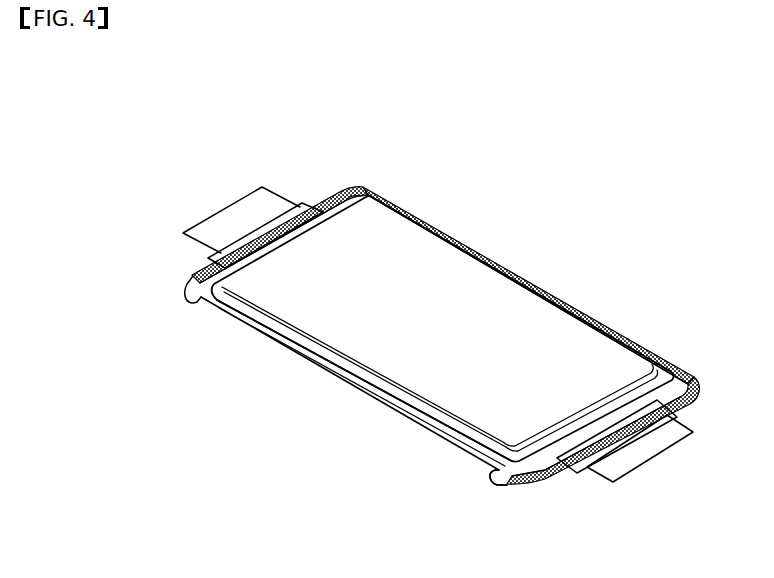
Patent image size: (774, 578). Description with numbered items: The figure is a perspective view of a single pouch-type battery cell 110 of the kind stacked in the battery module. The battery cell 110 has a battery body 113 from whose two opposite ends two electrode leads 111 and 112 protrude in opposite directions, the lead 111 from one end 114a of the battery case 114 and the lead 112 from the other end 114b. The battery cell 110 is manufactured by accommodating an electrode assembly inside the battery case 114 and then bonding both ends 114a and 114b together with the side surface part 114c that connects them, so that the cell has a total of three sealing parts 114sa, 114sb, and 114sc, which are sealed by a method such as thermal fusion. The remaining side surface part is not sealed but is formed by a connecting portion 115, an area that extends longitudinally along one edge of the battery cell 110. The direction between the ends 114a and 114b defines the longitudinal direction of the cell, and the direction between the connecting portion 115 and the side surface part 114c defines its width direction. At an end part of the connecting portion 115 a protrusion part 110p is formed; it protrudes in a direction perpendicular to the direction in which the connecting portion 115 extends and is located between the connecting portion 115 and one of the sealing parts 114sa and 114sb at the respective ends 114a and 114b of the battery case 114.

The battery cell 110 is at (141, 95).
The protrusion part 110p is at (185, 287).
The electrode lead 111 is at (235, 213).
The electrode lead 112 is at (662, 457).
The battery body 113 is at (447, 270).
The battery case 114 is at (683, 371).
The one end of the battery case 114a is at (342, 200).
The other end of the battery case 114b is at (534, 468).
The side surface part 114c is at (537, 285).
The sealing part 114sa is at (322, 197).
The sealing part 114sb is at (684, 402).
The sealing part 114sc is at (620, 337).
The connecting portion 115 is at (375, 392).